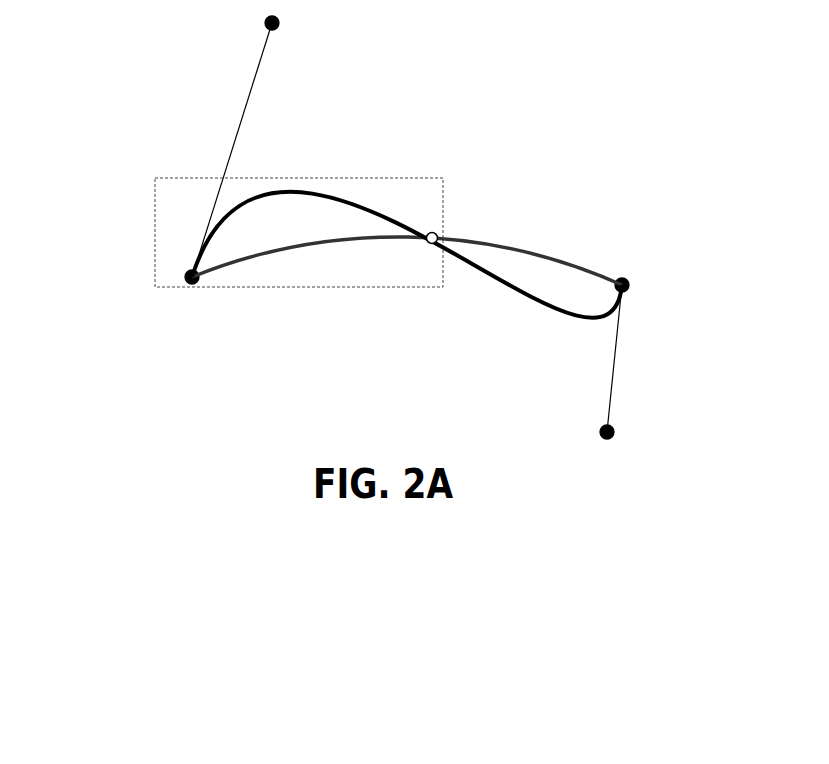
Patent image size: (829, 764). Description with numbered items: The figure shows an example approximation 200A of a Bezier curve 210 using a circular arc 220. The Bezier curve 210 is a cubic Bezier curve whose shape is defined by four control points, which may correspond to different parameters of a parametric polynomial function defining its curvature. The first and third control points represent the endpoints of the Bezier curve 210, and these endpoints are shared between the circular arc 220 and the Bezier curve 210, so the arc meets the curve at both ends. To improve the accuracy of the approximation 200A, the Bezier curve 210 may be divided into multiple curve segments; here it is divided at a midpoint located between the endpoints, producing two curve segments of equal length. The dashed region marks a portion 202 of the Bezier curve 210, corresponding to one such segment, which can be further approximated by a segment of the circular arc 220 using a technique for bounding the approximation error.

The approximation 200A is at (630, 100).
The portion 202 is at (156, 207).
The Bezier curve 210 is at (508, 289).
The circular arc 220 is at (547, 257).